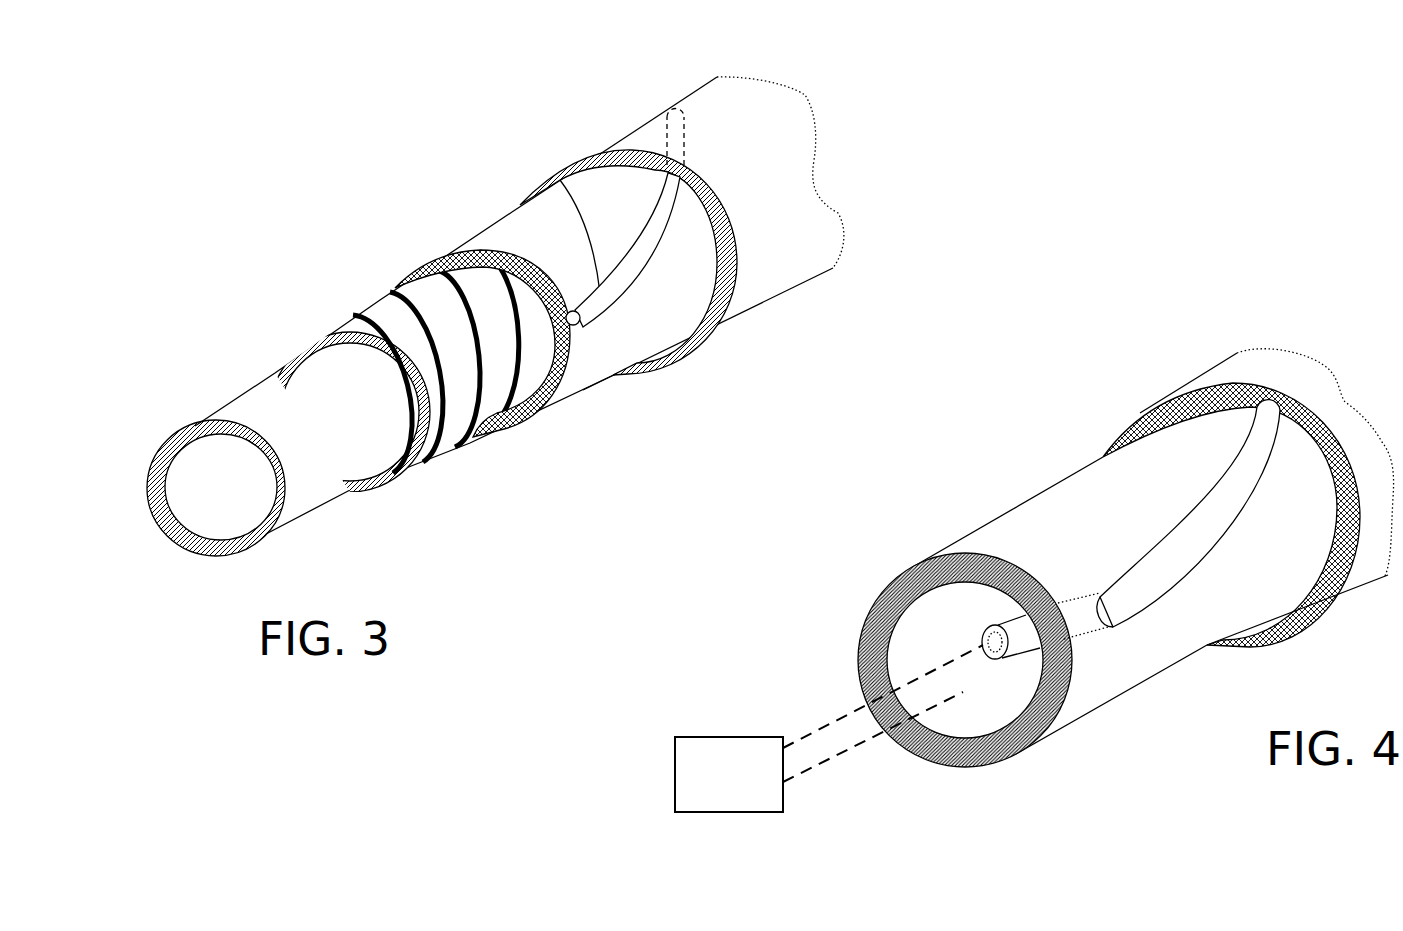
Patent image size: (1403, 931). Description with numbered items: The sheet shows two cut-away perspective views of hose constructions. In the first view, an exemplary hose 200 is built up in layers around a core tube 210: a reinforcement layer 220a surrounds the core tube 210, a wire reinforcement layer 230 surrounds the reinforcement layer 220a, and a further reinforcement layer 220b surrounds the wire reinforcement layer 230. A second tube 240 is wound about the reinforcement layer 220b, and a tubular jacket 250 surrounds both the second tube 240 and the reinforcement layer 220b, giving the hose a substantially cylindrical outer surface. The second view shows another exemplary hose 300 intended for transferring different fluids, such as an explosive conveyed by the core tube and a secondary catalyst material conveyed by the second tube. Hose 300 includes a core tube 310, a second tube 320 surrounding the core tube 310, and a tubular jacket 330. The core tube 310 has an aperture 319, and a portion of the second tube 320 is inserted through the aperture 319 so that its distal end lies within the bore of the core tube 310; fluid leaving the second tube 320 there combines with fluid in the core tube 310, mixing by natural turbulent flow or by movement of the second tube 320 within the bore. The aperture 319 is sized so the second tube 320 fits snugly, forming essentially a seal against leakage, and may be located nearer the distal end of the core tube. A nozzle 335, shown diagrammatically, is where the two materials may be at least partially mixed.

In FIG. 3, the hose 200 is at (495, 319).
In FIG. 3, the core tube 210 is at (303, 516).
In FIG. 3, the reinforcement layer 220a is at (340, 330).
In FIG. 3, the reinforcement layer 220b is at (583, 390).
In FIG. 3, the wire reinforcement layer 230 is at (445, 456).
In FIG. 3, the second tube 240 is at (593, 295).
In FIG. 3, the tubular jacket 250 is at (762, 313).
In FIG. 4, the hose 300 is at (973, 562).
In FIG. 4, the core tube 310 is at (1058, 728).
In FIG. 4, the aperture 319 is at (1095, 628).
In FIG. 4, the second tube 320 is at (1166, 598).
In FIG. 4, the tubular jacket 330 is at (1354, 595).
In FIG. 4, the nozzle 335 is at (675, 773).